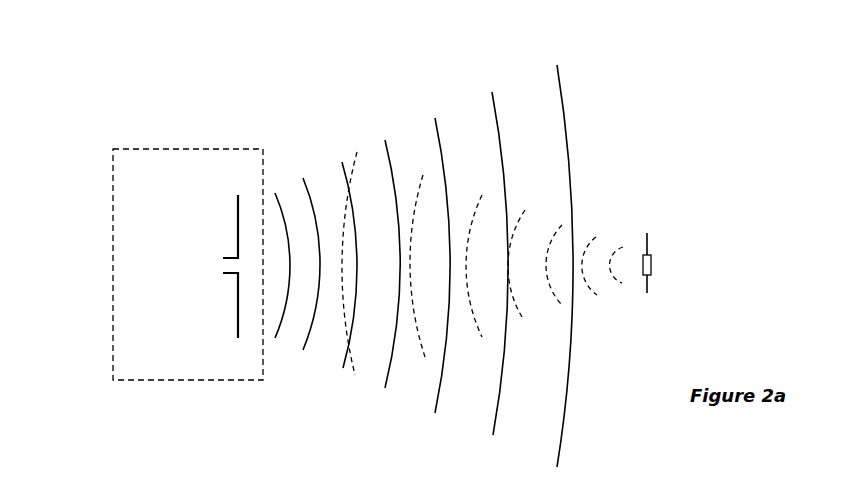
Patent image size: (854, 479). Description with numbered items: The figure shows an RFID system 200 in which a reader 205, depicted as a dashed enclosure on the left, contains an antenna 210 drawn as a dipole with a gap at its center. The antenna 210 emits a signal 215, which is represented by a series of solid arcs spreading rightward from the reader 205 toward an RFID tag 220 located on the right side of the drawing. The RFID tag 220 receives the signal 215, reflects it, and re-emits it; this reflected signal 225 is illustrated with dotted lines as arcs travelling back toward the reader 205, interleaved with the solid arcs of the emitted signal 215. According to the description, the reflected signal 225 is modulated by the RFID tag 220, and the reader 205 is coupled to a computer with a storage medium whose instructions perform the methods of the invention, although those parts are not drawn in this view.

The RFID system 200 is at (74, 426).
The reader 205 is at (150, 149).
The antenna 210 is at (238, 227).
The signal 215 is at (495, 413).
The RFID tag 220 is at (651, 266).
The reflected signal 225 is at (556, 231).